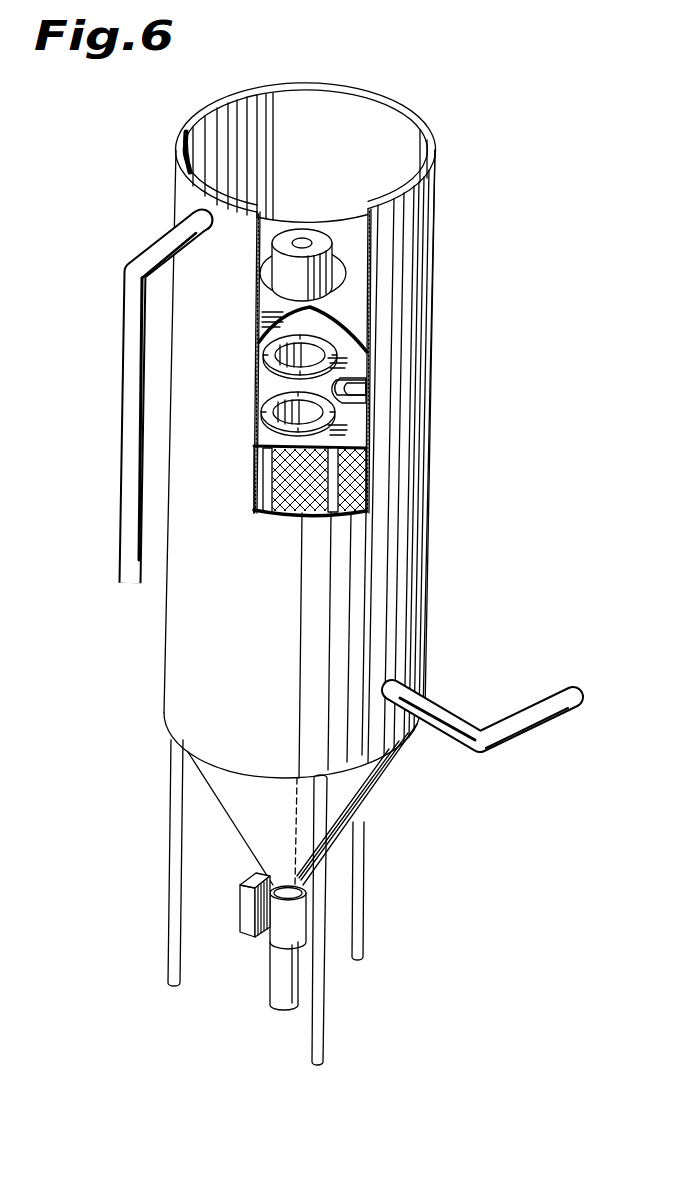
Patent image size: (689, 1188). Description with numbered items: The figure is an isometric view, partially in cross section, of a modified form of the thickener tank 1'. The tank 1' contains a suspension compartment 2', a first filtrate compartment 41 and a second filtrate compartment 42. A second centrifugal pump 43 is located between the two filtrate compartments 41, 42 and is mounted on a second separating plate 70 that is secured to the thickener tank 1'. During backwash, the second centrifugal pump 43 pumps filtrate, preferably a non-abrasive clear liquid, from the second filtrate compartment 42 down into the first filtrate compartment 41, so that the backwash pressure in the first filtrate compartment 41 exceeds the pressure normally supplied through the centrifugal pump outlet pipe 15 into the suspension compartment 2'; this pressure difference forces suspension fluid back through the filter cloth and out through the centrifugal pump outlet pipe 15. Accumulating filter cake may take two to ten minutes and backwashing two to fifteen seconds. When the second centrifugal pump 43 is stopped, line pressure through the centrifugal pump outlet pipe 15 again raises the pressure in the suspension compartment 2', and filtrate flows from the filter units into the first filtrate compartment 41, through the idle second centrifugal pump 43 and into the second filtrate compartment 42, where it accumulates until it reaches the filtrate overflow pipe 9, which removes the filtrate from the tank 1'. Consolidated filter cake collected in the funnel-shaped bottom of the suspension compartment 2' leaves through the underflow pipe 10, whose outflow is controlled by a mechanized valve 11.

The thickener tank 1' is at (330, 574).
The suspension compartment 2' is at (233, 543).
The filtrate overflow pipe 9 is at (125, 428).
The underflow pipe 10 is at (277, 982).
The mechanized valve 11 is at (243, 910).
The centrifugal pump outlet pipe 15 is at (497, 740).
The first filtrate compartment 41 is at (352, 423).
The second filtrate compartment 42 is at (356, 290).
The second centrifugal pump 43 is at (320, 233).
The second separating plate 70 is at (287, 222).